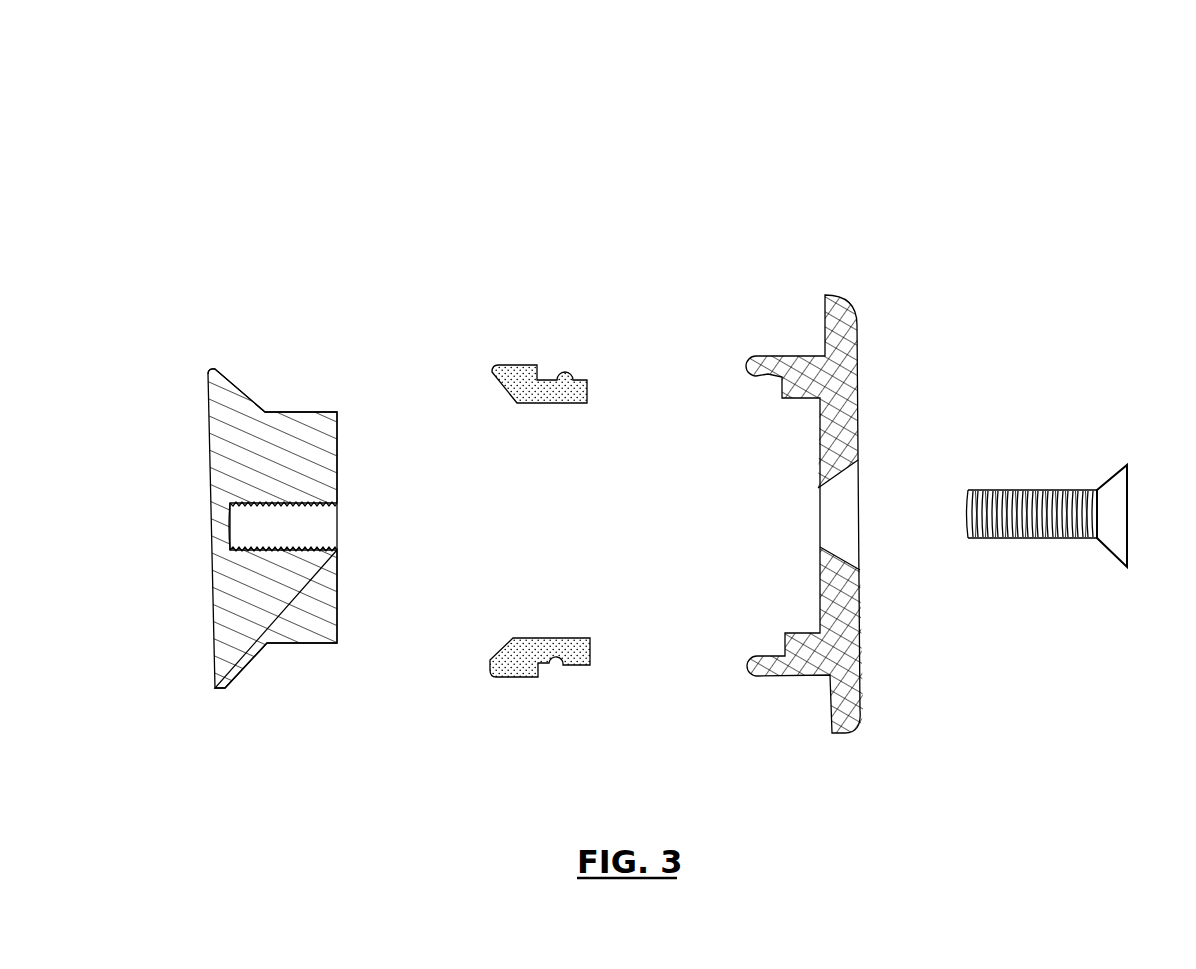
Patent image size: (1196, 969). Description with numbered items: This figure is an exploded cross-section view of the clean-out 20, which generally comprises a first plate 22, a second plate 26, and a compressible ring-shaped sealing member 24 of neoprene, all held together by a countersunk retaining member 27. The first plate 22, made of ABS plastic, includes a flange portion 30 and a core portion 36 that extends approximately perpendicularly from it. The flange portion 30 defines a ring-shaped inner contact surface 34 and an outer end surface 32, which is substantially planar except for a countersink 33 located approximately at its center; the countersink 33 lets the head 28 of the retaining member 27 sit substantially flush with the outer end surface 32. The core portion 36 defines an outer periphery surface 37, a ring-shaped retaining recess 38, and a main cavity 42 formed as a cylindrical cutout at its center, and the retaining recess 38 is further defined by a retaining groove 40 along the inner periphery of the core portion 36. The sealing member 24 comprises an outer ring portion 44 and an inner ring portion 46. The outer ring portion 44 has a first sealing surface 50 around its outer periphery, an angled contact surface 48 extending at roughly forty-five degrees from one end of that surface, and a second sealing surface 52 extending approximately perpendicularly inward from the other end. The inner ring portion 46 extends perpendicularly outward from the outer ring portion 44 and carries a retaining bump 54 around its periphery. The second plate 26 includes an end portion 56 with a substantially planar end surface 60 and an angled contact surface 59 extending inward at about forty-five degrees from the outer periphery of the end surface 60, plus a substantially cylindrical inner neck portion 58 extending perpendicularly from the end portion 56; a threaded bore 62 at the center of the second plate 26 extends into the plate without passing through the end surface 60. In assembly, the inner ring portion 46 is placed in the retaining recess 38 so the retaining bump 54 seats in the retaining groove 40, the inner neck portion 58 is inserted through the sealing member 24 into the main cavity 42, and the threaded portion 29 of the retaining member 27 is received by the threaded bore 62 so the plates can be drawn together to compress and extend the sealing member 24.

The clean-out 20 is at (1089, 179).
The first plate 22 is at (833, 280).
The sealing member 24 is at (537, 498).
The second plate 26 is at (276, 336).
The retaining member 27 is at (1078, 463).
The head 28 is at (1113, 507).
The threaded portion 29 is at (1015, 488).
The flange portion 30 is at (851, 320).
The outer end surface 32 is at (858, 408).
The countersink 33 is at (852, 525).
The inner contact surface 34 is at (830, 697).
The core portion 36 is at (810, 655).
The outer periphery surface 37 is at (782, 368).
The retaining recess 38 is at (772, 388).
The retaining groove 40 is at (766, 655).
The main cavity 42 is at (752, 513).
The outer ring portion 44 is at (522, 383).
The inner ring portion 46 is at (550, 395).
The angled contact surface 48 is at (512, 642).
The first sealing surface 50 is at (515, 678).
The second sealing surface 52 is at (542, 667).
The retaining bump 54 is at (568, 374).
The end portion 56 is at (235, 650).
The inner neck portion 58 is at (317, 618).
The angled contact surface 59 is at (238, 388).
The end surface 60 is at (212, 425).
The threaded bore 62 is at (298, 527).